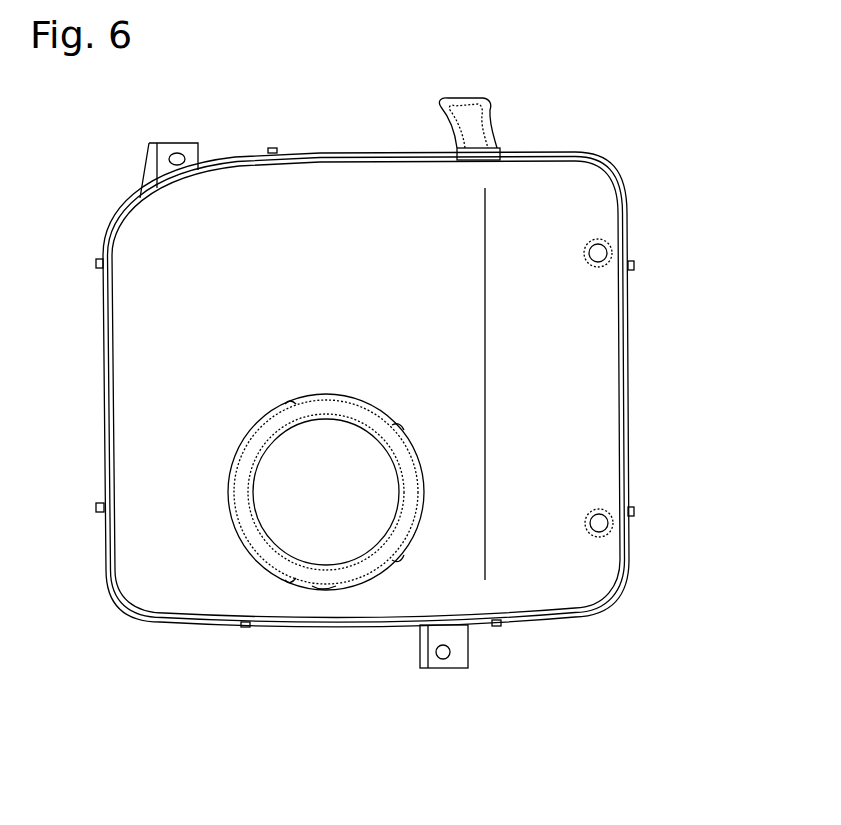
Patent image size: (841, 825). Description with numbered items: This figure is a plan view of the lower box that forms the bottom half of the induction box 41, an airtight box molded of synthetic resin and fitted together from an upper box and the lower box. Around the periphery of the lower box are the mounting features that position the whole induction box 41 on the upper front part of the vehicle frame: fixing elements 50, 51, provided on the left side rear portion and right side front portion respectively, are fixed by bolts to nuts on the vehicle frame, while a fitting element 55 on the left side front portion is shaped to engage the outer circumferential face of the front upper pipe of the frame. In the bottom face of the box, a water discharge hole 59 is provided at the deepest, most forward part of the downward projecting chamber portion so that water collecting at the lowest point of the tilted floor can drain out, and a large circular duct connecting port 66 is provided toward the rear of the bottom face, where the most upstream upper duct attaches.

The induction box 41 is at (318, 150).
The fixing element 50 is at (143, 166).
The fixing element 51 is at (420, 648).
The fitting element 55 is at (497, 133).
The water discharge hole 59 is at (600, 253).
The duct connecting port 66 is at (289, 424).